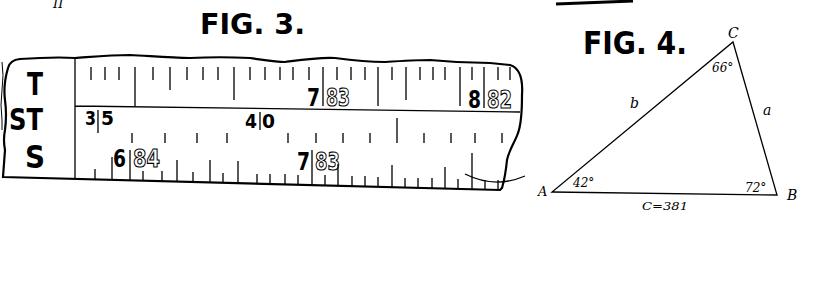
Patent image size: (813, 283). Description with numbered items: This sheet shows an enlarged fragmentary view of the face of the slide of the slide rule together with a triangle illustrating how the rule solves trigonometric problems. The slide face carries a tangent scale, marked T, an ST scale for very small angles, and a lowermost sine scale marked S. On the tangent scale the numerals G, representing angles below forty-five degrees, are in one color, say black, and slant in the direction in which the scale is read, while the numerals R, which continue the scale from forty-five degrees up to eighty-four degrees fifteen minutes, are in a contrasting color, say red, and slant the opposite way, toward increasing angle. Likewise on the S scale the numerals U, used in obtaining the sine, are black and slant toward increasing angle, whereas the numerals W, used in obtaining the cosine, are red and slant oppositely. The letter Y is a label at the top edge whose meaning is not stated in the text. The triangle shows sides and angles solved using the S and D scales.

The numerals representing the angles below 45° G is at (120, 88).
The numerals indicating the continuation scale R is at (159, 86).
The numerals used in obtaining the cosine W is at (502, 161).
The numerals used in obtaining the sine U is at (504, 167).
The index pointer Y is at (553, 0).